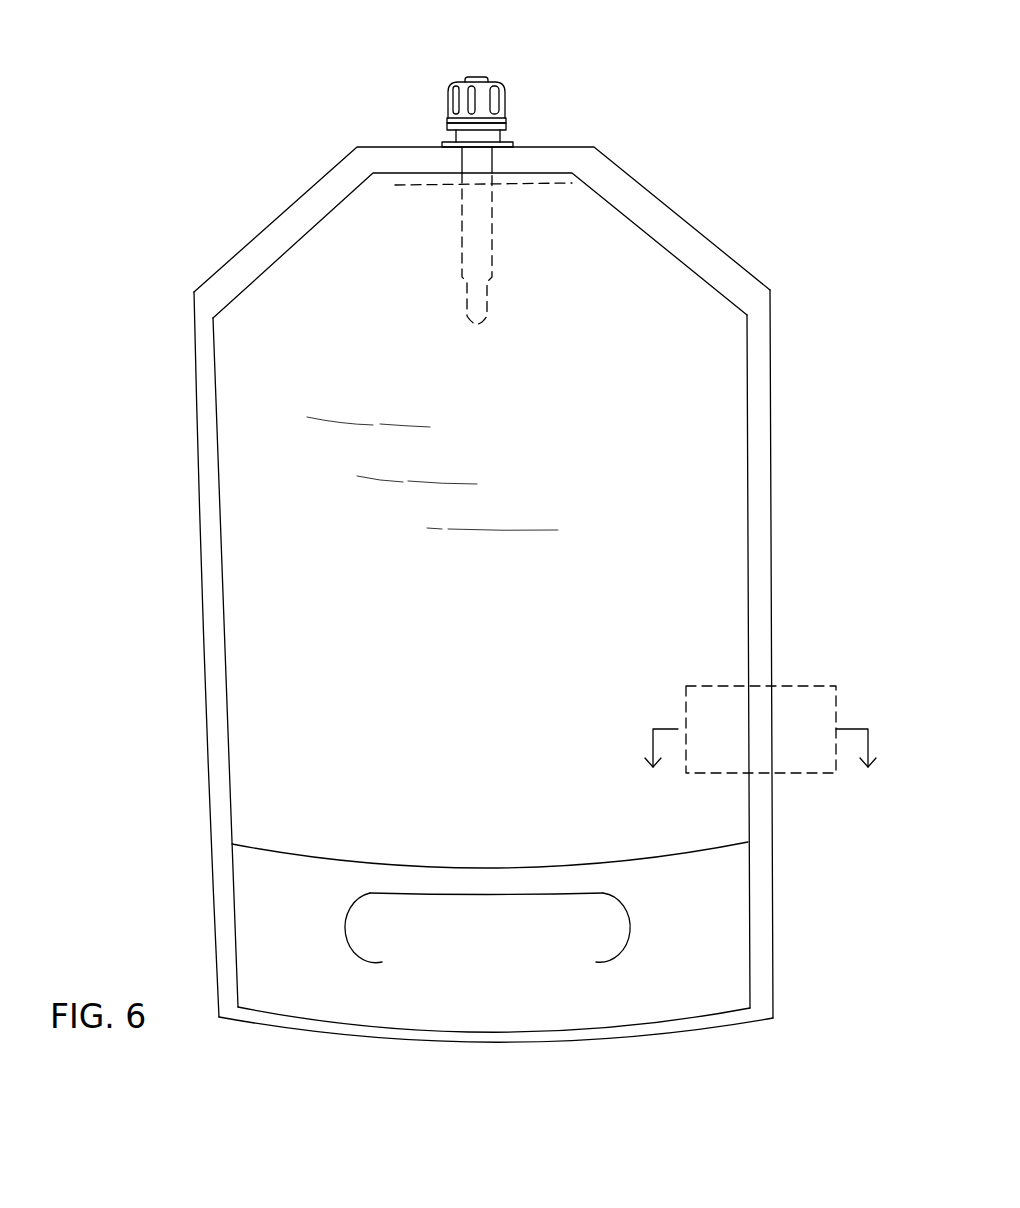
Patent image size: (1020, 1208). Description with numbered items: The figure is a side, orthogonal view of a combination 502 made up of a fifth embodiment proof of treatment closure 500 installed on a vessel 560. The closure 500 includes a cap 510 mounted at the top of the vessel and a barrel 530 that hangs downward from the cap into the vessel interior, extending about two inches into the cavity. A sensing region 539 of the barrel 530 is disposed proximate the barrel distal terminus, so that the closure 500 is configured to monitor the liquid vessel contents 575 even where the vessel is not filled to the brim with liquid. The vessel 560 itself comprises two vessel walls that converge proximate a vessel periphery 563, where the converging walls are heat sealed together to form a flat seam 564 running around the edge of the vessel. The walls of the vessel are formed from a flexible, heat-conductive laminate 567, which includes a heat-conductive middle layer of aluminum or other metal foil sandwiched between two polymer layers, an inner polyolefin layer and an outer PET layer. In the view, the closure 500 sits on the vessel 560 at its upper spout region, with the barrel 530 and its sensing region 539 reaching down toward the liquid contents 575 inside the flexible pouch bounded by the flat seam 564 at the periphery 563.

The combination 502 is at (173, 106).
The proof of treatment closure 500 is at (542, 98).
The cap 510 is at (448, 90).
The barrel 530 is at (495, 228).
The sensing region 539 is at (489, 311).
The vessel 560 is at (165, 612).
The vessel periphery 563 is at (198, 489).
The flat seam 564 is at (380, 155).
The flexible, heat-conductive laminate 567 is at (490, 678).
The liquid vessel contents 575 is at (395, 185).